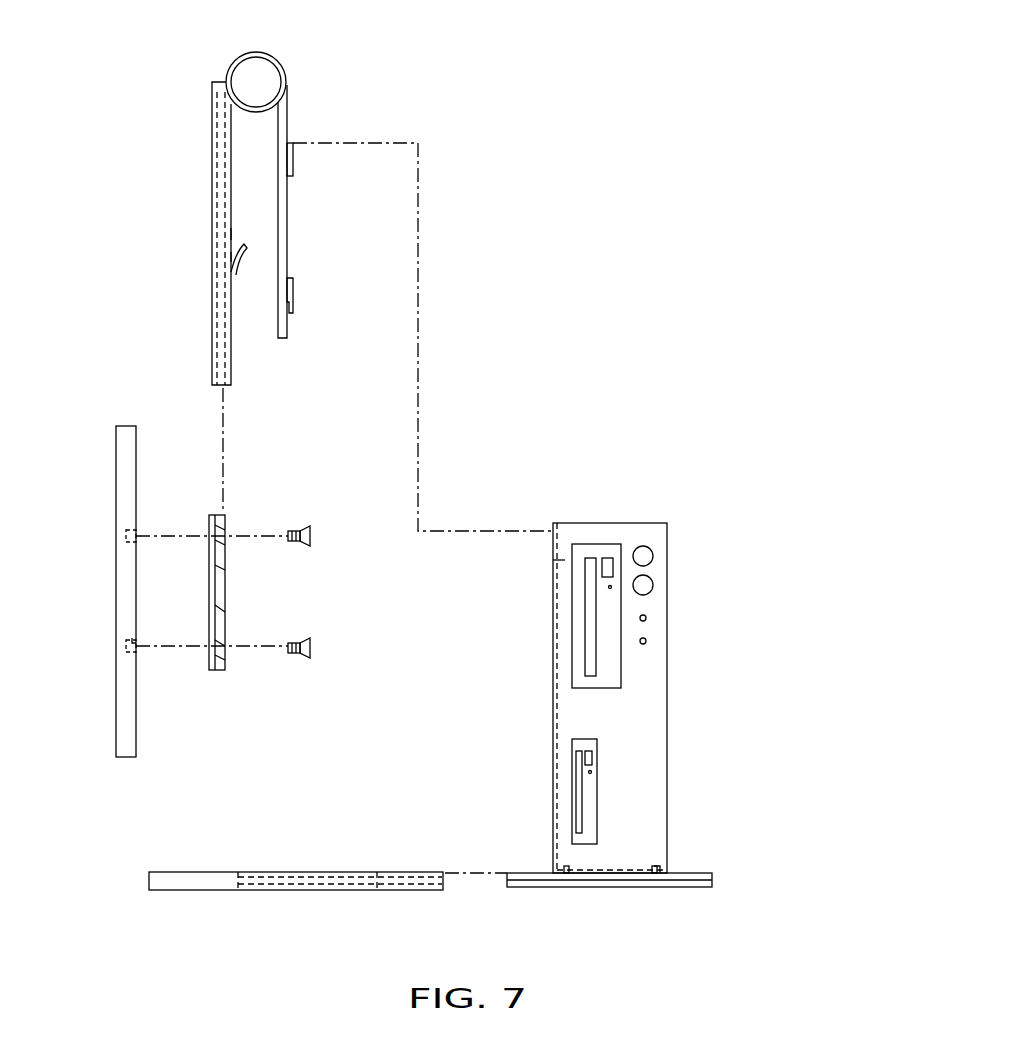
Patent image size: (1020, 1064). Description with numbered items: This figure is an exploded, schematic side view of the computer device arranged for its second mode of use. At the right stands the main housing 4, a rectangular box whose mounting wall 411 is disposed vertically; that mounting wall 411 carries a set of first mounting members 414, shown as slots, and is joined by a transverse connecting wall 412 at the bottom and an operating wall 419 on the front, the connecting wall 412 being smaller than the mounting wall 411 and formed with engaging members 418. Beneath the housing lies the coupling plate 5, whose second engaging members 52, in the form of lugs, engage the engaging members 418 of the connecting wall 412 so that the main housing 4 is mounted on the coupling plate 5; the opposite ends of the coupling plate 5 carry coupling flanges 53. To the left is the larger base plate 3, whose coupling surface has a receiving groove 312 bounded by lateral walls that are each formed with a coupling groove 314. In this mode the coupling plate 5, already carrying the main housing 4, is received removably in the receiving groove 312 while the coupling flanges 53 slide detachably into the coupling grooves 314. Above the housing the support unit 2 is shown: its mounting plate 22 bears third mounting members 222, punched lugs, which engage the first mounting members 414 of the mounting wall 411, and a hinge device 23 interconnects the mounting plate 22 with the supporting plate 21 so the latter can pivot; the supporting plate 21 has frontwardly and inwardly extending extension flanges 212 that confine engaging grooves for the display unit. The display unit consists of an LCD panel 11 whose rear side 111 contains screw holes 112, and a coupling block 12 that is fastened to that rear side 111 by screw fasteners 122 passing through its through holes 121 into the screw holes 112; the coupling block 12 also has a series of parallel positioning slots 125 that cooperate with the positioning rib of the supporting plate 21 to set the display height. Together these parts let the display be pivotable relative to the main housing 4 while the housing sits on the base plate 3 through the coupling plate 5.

The support unit 2 is at (258, 197).
The supporting plate 21 is at (193, 233).
The extension flanges 212 is at (216, 157).
The mounting plate 22 is at (315, 211).
The third mounting members 222 is at (290, 163).
The hinge device 23 is at (258, 82).
The liquid crystal display panel 11 is at (125, 591).
The rear side 111 is at (137, 562).
The screw holes 112 is at (137, 624).
The coupling block 12 is at (251, 574).
The through holes 121 is at (224, 543).
The positioning slots 125 is at (224, 573).
The screw fasteners 122 is at (306, 543).
The main housing 4 is at (622, 672).
The mounting wall 411 is at (553, 633).
The first mounting members 414 is at (552, 560).
The operating wall 419 is at (658, 643).
The engaging members 418 is at (640, 870).
The connecting wall 412 is at (667, 872).
The coupling plate 5 is at (626, 838).
The second engaging members 52 is at (660, 860).
The coupling flanges 53 is at (704, 883).
The base plate 3 is at (285, 852).
The receiving groove 312 is at (287, 876).
The coupling grooves 314 is at (378, 874).